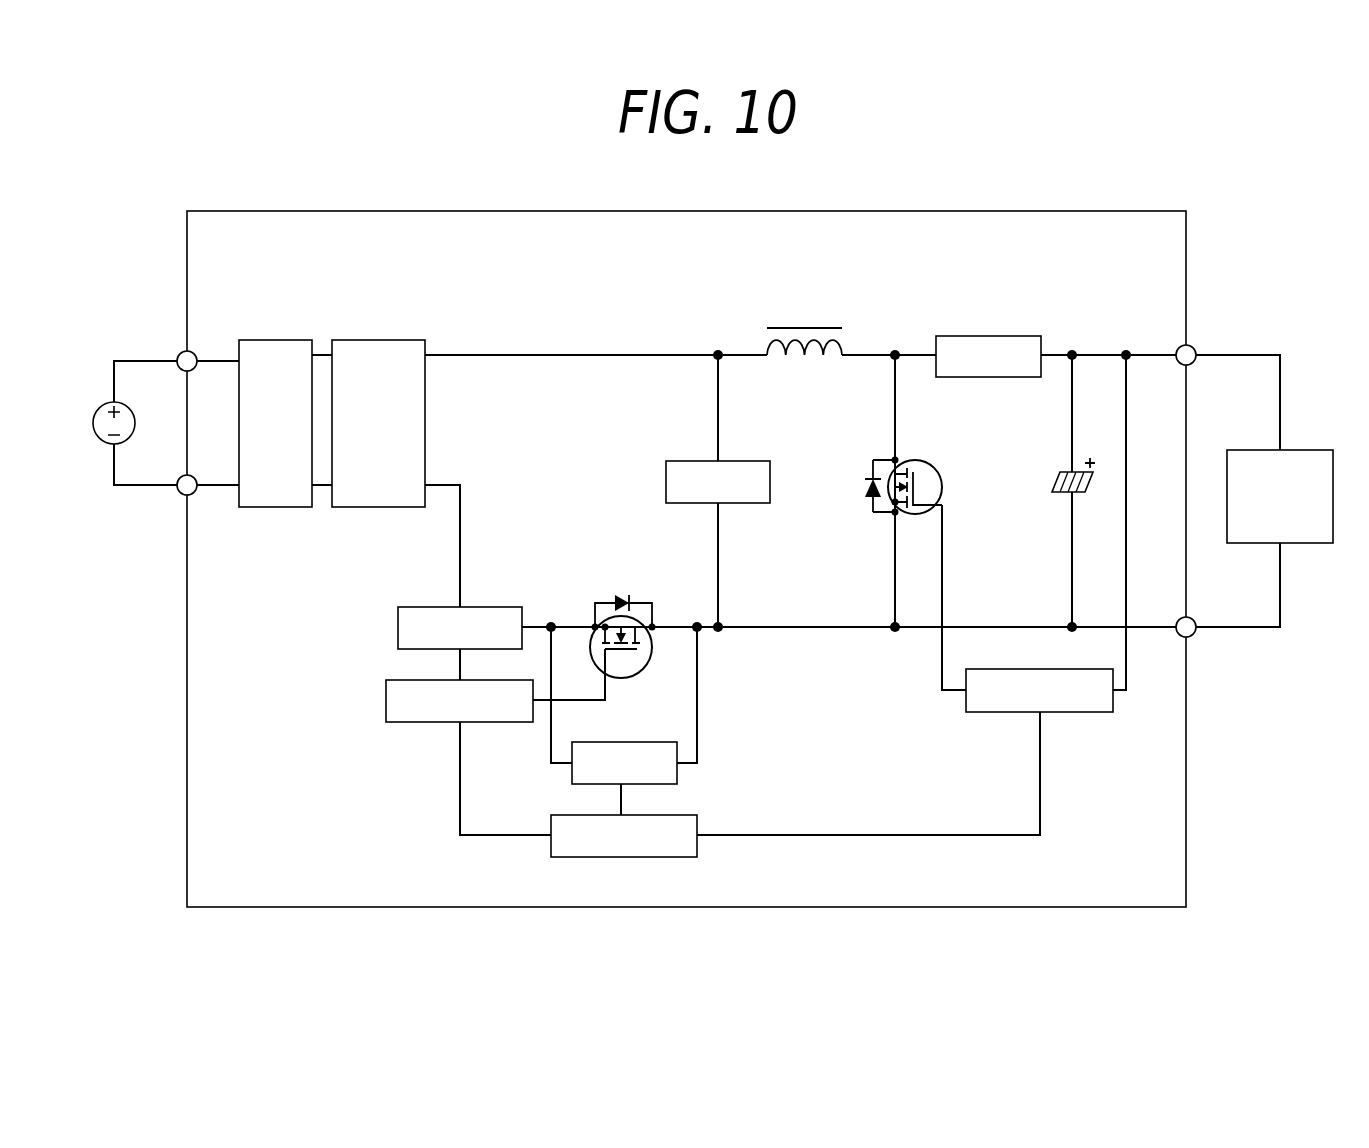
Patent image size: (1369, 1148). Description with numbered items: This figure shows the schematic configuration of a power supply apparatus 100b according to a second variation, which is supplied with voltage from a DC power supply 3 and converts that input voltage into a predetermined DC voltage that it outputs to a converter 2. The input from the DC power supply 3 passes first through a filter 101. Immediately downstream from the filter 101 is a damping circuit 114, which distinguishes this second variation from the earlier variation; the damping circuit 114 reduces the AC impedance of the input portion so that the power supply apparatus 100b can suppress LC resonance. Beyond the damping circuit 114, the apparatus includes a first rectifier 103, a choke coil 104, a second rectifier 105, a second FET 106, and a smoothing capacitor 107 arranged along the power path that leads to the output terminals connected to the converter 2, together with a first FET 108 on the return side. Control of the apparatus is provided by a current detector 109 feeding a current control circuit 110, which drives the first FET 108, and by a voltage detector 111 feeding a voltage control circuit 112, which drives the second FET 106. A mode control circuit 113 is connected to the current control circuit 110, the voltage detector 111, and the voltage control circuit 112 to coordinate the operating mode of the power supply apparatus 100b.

The converter 2 is at (1306, 450).
The DC power supply 3 is at (97, 406).
The power supply apparatus 100b is at (1078, 211).
The filter 101 is at (272, 340).
The first rectifier 103 is at (742, 461).
The choke coil 104 is at (804, 328).
The second rectifier 105 is at (985, 336).
The second FET 106 is at (905, 462).
The smoothing capacitor 107 is at (1053, 484).
The first FET 108 is at (652, 603).
The current detector 109 is at (398, 627).
The current control circuit 110 is at (420, 722).
The voltage detector 111 is at (622, 742).
The voltage control circuit 112 is at (1068, 712).
The mode control circuit 113 is at (700, 820).
The damping circuit 114 is at (372, 340).